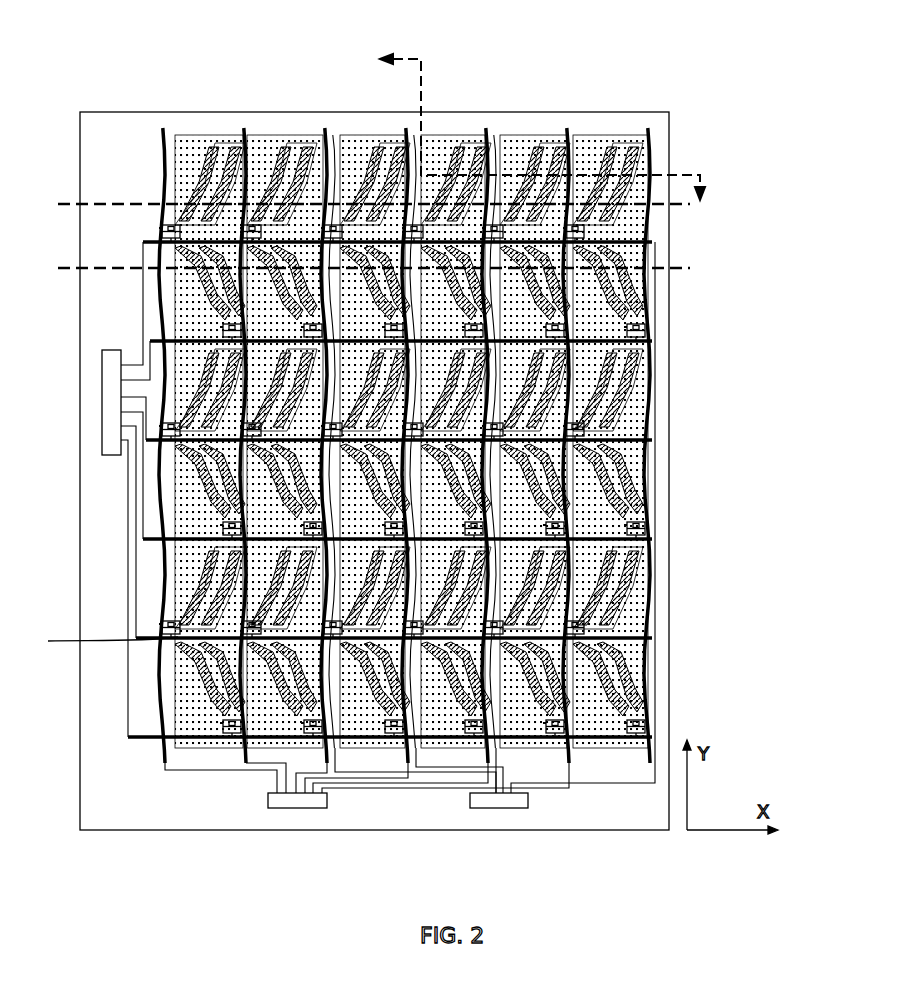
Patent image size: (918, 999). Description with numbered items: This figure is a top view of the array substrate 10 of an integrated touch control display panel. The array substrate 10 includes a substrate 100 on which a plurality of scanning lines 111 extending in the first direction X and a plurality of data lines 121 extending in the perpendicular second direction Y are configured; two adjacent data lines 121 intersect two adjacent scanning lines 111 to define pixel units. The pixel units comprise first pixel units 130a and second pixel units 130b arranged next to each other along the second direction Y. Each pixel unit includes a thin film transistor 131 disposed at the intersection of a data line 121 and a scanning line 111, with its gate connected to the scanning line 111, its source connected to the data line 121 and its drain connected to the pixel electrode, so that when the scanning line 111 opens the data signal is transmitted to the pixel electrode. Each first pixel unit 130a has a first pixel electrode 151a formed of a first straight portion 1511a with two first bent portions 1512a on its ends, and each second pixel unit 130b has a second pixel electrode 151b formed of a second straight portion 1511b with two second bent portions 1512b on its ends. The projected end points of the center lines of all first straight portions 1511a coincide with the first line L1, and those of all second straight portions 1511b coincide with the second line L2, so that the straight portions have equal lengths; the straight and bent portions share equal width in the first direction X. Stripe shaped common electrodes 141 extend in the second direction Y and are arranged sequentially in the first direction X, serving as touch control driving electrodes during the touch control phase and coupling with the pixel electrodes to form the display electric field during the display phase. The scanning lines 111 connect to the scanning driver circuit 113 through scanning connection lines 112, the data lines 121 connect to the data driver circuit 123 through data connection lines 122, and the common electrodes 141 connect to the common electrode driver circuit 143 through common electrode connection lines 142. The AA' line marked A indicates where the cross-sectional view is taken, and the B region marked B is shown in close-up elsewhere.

The array substrate 10 is at (173, 95).
The substrate 100 is at (652, 381).
The scanning lines 111 is at (652, 241).
The scanning connection lines 112 is at (143, 300).
The scanning driver circuit 113 is at (103, 405).
The data lines 121 is at (656, 282).
The data connection lines 122 is at (205, 772).
The data driver 123 is at (298, 808).
The first pixel units 130a is at (495, 386).
The second pixel units 130b is at (495, 481).
The thin film transistor 131 is at (648, 529).
The stripe shaped common electrodes 141 is at (230, 135).
The common electrode connection lines 142 is at (336, 135).
The common electrode driver circuit 143 is at (503, 808).
The first pixel electrode 151a is at (495, 386).
The first straight portion 1511a is at (612, 578).
The first bent portions 1512a is at (612, 610).
The second pixel electrode 151b is at (495, 481).
The second straight portion 1511b is at (610, 655).
The second bent portions 1512b is at (622, 692).
The first line L1 is at (359, 211).
The second line L2 is at (359, 268).
The AA' line A is at (535, 133).
The B region B is at (106, 640).